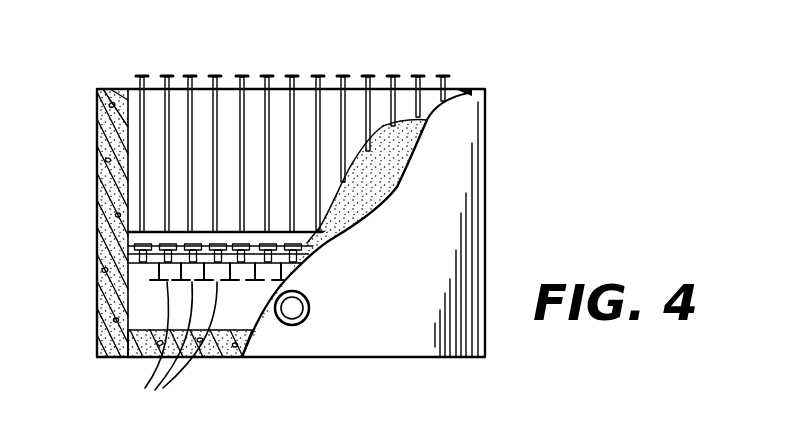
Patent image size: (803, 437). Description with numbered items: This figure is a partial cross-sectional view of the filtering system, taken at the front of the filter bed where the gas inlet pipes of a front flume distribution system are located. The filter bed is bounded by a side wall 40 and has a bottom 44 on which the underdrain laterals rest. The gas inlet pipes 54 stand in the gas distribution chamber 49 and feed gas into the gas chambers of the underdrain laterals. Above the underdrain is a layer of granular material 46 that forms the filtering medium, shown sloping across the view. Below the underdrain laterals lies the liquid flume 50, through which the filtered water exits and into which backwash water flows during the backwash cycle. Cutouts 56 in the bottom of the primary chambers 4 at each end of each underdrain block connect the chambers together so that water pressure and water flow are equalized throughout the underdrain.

The primary chambers 4 is at (665, 0).
The side wall 40 is at (100, 211).
The bottom 44 is at (223, 357).
The layer of granular material 46 is at (393, 170).
The gas distribution chamber 49 is at (277, 77).
The liquid flume 50 is at (309, 312).
The gas inlet pipes 54 is at (188, 73).
The cutouts 56 is at (172, 354).